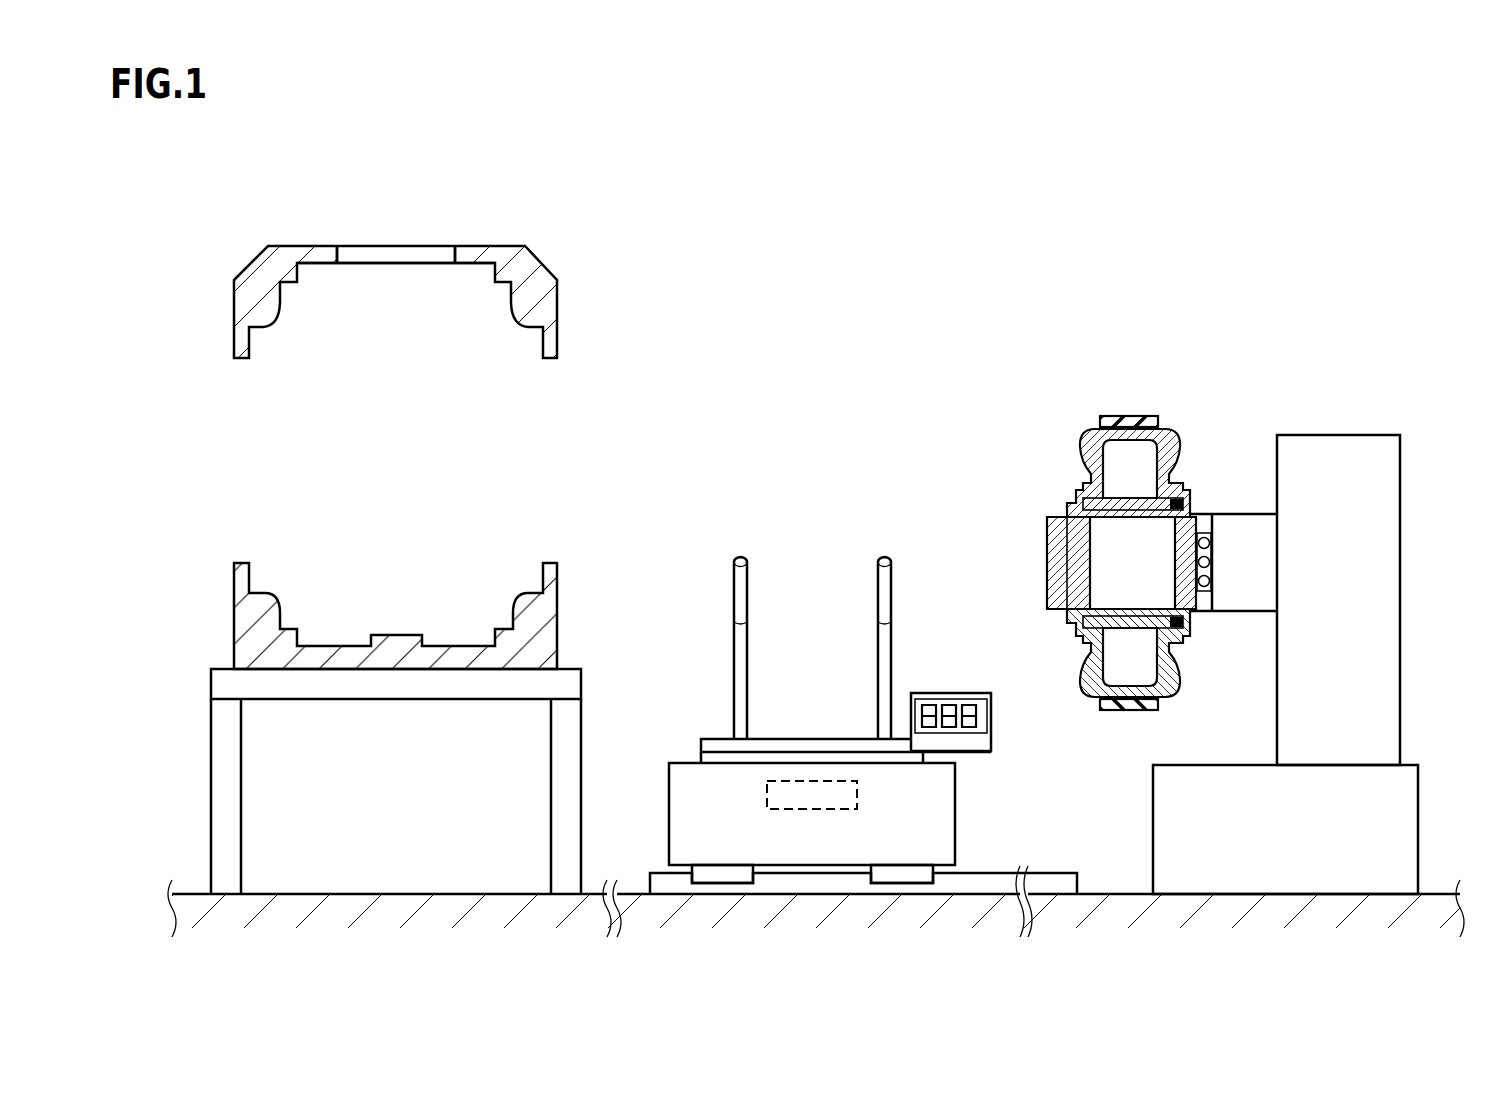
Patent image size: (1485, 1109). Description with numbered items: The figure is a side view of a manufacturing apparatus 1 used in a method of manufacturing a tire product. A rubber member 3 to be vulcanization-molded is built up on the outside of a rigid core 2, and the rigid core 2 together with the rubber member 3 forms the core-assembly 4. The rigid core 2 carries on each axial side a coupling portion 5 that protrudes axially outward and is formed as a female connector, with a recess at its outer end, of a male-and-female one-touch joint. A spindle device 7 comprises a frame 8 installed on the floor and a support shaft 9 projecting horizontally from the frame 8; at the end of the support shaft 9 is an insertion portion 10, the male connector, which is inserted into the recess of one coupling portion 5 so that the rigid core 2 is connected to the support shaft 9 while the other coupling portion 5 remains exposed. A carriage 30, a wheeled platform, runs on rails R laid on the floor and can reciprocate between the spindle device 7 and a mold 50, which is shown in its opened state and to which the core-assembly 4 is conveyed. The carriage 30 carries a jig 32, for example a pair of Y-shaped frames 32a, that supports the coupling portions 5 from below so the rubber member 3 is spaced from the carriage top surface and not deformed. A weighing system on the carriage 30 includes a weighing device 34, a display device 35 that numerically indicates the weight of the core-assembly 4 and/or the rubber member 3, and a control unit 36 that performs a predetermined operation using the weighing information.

The manufacturing apparatus 1 is at (796, 382).
The rigid core 2 is at (1083, 441).
The rubber member 3 is at (1125, 417).
The core-assembly 4 is at (1138, 308).
The coupling portion 5 is at (1230, 512).
The spindle device 7 is at (1382, 325).
The frame 8 is at (1338, 468).
The support shaft 9 is at (1251, 538).
The insertion portion 10 is at (1215, 577).
The carriage 30 is at (735, 519).
The jig 32 is at (877, 480).
The Y-shaped frame 32a is at (758, 583).
The weighing device 34 is at (716, 742).
The display device 35 is at (950, 688).
The control unit 36 is at (811, 795).
The mold 50 is at (279, 223).
The rails R is at (965, 873).